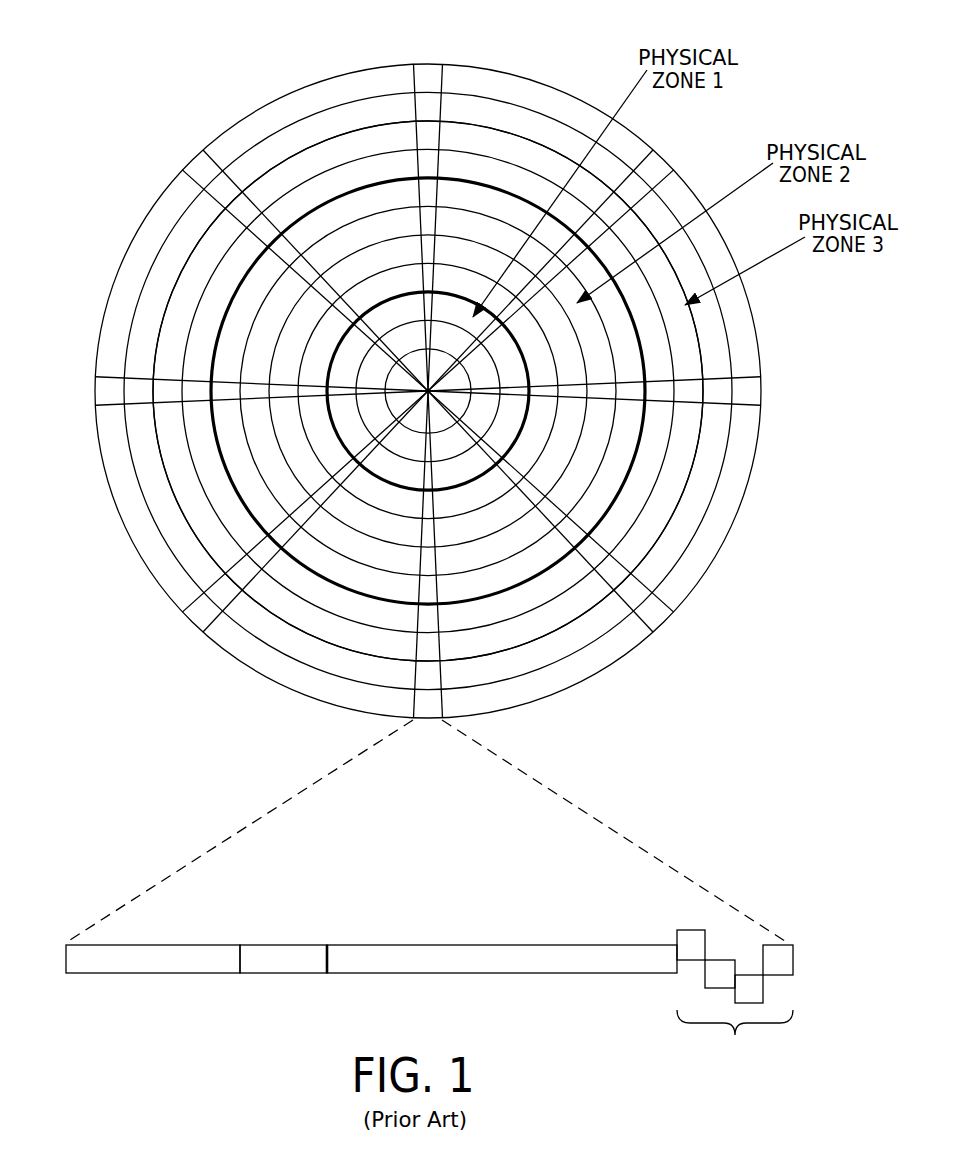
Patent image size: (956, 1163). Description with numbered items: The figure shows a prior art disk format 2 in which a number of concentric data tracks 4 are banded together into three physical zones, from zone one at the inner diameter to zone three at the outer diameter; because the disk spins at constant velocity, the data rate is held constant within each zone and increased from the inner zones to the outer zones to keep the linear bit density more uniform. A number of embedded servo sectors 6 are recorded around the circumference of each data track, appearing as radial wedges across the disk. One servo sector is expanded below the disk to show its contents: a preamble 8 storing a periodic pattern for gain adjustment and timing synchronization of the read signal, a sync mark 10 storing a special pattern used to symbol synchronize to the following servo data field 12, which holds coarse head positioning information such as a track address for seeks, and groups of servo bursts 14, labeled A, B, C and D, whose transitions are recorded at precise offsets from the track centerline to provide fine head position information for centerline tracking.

The disk format 2 is at (185, 70).
The data tracks 4 is at (543, 132).
The servo sectors 6 is at (429, 402).
The preamble 8 is at (133, 973).
The sync mark 10 is at (280, 973).
The servo data field 12 is at (490, 973).
The servo bursts 14 is at (663, 915).